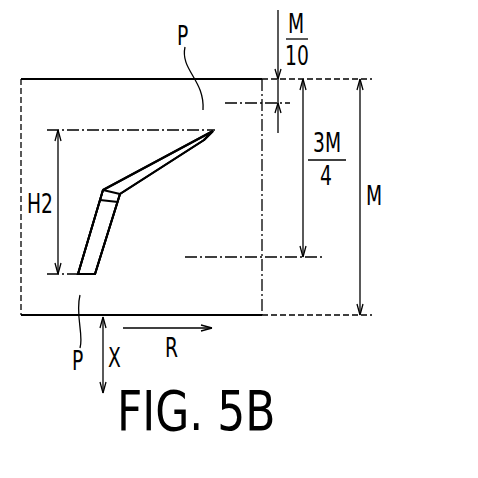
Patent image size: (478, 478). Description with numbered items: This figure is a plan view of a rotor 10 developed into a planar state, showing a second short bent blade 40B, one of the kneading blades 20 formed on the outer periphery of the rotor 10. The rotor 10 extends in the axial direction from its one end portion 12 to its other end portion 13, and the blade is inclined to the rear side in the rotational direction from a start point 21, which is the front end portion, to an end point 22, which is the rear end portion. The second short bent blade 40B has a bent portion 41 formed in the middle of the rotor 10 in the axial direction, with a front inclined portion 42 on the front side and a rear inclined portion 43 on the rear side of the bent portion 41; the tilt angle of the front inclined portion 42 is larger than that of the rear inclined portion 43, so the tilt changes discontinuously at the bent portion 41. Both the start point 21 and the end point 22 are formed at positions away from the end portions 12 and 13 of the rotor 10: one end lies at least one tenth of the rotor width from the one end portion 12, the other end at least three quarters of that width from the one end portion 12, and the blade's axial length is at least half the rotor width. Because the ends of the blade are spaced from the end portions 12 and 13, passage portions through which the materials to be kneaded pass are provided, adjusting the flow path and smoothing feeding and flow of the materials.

The rotor 10 is at (196, 197).
The one end portion 12 is at (67, 79).
The other end portion 13 is at (238, 316).
The kneading blade 20 is at (94, 258).
The start point 21 is at (208, 128).
The end point 22 is at (80, 275).
The second short bent blade 40B is at (132, 183).
The bent portion 41 is at (106, 186).
The front inclined portion 42 is at (188, 152).
The rear inclined portion 43 is at (100, 238).